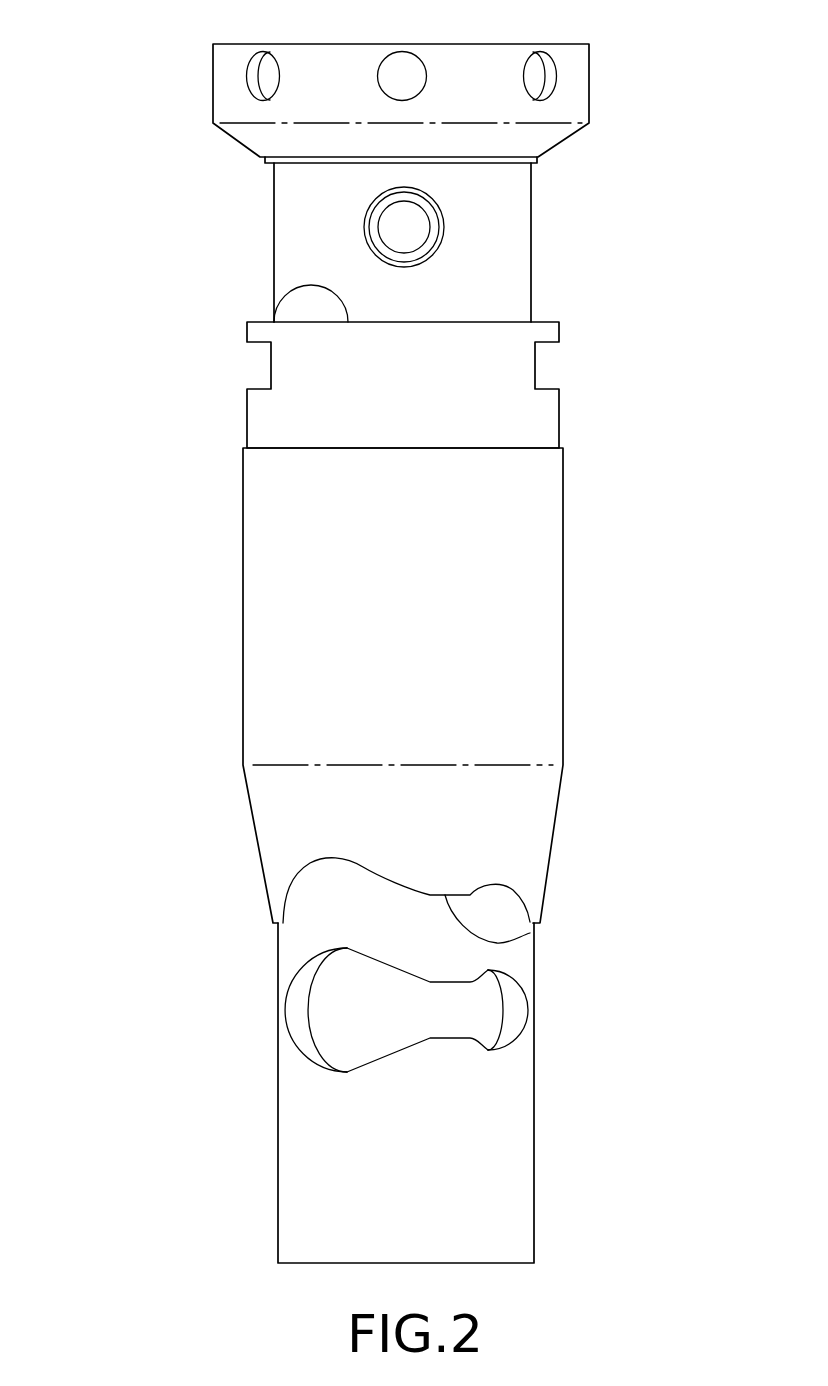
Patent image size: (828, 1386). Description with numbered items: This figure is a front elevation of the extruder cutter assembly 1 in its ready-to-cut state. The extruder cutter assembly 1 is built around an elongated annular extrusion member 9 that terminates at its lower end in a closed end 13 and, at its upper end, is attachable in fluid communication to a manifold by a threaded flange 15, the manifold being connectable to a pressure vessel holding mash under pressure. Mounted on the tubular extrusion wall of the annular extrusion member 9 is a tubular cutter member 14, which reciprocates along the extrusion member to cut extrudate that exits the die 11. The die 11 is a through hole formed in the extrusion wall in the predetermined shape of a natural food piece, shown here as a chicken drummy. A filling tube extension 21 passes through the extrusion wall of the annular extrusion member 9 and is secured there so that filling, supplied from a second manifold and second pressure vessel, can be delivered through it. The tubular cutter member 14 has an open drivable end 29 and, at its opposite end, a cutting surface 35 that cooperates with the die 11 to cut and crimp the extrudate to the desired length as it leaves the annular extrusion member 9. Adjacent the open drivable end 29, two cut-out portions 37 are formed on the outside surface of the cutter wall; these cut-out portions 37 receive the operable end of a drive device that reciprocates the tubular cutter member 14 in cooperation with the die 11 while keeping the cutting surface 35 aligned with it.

The extruder cutter assembly 1 is at (144, 209).
The annular extrusion member 9 is at (505, 273).
The die 11 is at (342, 1015).
The closed end 13 is at (497, 1263).
The tubular cutter member 14 is at (525, 612).
The threaded flange 15 is at (573, 88).
The filling tube extension 21 is at (363, 240).
The open drivable end 29 is at (288, 292).
The cutting surface 35 is at (517, 937).
The cut-out portions 37 is at (258, 368).